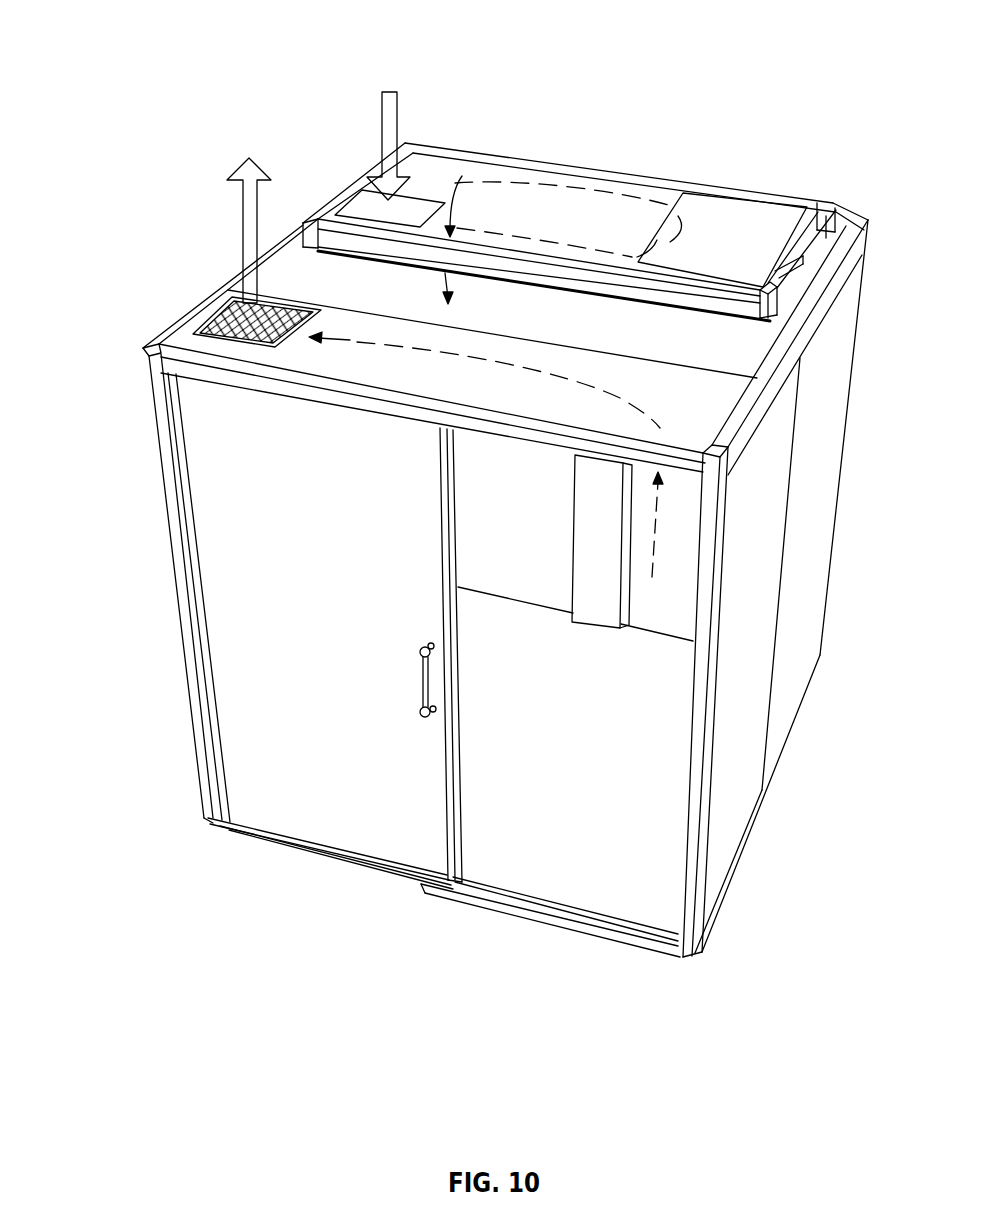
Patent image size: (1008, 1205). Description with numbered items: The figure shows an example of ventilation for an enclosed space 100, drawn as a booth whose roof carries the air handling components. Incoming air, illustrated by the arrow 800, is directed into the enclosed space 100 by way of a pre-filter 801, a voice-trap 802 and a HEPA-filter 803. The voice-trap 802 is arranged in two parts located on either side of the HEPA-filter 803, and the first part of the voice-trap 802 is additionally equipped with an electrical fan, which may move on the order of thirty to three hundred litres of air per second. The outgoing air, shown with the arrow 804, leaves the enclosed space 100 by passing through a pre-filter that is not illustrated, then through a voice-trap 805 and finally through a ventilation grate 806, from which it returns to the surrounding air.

The enclosed space 100 is at (567, 845).
The arrow 800 is at (381, 109).
The pre-filter 801 is at (437, 203).
The voice-trap 802 is at (578, 225).
The HEPA-filter 803 is at (743, 212).
The arrow 804 is at (240, 212).
The voice-trap 805 is at (363, 342).
The ventilation grate 806 is at (207, 320).